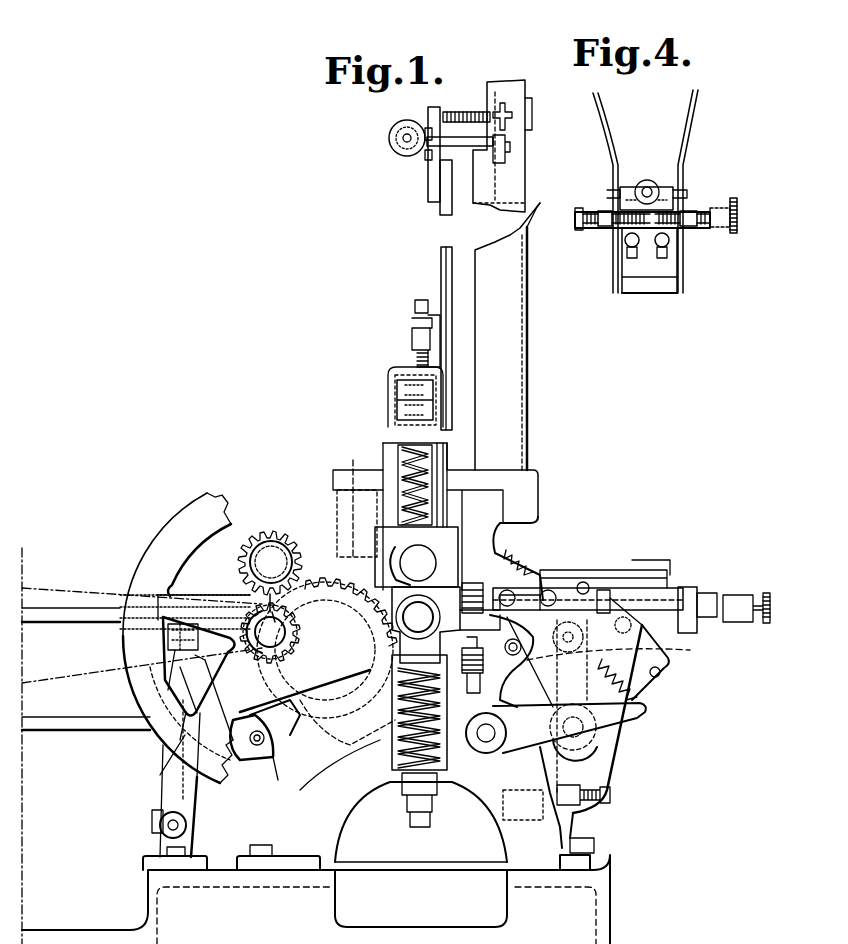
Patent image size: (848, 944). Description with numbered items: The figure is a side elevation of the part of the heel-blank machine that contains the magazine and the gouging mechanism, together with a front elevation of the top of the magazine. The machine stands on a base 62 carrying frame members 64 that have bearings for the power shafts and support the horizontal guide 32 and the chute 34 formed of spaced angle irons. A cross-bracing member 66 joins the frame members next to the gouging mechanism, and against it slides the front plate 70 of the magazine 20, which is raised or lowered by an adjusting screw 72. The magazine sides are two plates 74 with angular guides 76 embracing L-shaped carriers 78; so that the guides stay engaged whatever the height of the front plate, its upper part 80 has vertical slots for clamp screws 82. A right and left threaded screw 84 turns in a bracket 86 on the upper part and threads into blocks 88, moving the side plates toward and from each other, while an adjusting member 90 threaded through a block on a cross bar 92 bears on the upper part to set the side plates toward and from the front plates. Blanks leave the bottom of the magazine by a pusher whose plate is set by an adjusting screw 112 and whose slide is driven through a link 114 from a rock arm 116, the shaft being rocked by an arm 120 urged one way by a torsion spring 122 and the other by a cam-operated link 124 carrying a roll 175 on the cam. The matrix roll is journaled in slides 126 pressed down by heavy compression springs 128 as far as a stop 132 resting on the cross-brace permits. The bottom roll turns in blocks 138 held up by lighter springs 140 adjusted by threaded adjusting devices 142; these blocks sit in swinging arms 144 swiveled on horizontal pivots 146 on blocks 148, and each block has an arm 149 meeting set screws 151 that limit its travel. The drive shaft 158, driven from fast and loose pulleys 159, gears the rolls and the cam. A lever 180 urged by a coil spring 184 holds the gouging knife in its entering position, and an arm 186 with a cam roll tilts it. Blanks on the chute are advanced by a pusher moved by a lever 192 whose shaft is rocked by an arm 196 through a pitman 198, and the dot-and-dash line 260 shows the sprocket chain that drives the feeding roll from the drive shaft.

In FIG. 1, the magazine 20 is at (515, 420).
In FIG. 4, the magazine 20 is at (670, 290).
In FIG. 1, the horizontal guide 32 is at (245, 540).
In FIG. 1, the chute 34 is at (60, 620).
In FIG. 1, the base 62 is at (565, 918).
In FIG. 1, the frame members 64 is at (510, 838).
In FIG. 1, the cross-bracing member 66 is at (390, 370).
In FIG. 1, the front plate 70 is at (441, 272).
In FIG. 1, the adjusting screw 72 is at (414, 302).
In FIG. 1, the side plates 74 is at (510, 357).
In FIG. 4, the side plates 74 is at (680, 143).
In FIG. 1, the angular guides 76 is at (507, 148).
In FIG. 1, the L-shaped carriers 78 is at (458, 135).
In FIG. 1, the upper part of front plate 80 is at (434, 200).
In FIG. 4, the upper part of front plate 80 is at (668, 265).
In FIG. 1, the clamp screws 82 is at (425, 160).
In FIG. 4, the clamp screws 82 is at (660, 258).
In FIG. 1, the right and left threaded screw 84 is at (389, 140).
In FIG. 4, the right and left threaded screw 84 is at (708, 207).
In FIG. 4, the bracket 86 is at (582, 232).
In FIG. 4, the blocks 88 is at (602, 210).
In FIG. 1, the adjusting member 90 is at (527, 100).
In FIG. 1, the cross bar 92 is at (505, 105).
In FIG. 4, the cross bar 92 is at (622, 185).
In FIG. 1, the adjusting screw 112 is at (766, 593).
In FIG. 1, the link 114 is at (668, 680).
In FIG. 1, the rock arm 116 is at (640, 700).
In FIG. 1, the arm 120 is at (552, 794).
In FIG. 1, the torsion spring 122 is at (692, 652).
In FIG. 1, the cam-operated link 124 is at (590, 570).
In FIG. 1, the slides 126 is at (520, 520).
In FIG. 1, the compression spring 128 is at (430, 480).
In FIG. 1, the stop 132 is at (397, 404).
In FIG. 1, the blocks 138 is at (395, 690).
In FIG. 1, the springs 140 is at (400, 735).
In FIG. 1, the threaded adjusting devices 142 is at (405, 822).
In FIG. 1, the swinging arms 144 is at (278, 760).
In FIG. 1, the horizontal pivots 146 is at (163, 680).
In FIG. 1, the blocks 148 is at (180, 667).
In FIG. 1, the arm 149 is at (500, 560).
In FIG. 1, the set screws 151 is at (520, 552).
In FIG. 1, the drive shaft 158 is at (270, 600).
In FIG. 1, the fast and loose pulleys 159 is at (211, 490).
In FIG. 1, the roll 175 is at (353, 472).
In FIG. 1, the lever 180 is at (337, 784).
In FIG. 1, the coil spring 184 is at (620, 745).
In FIG. 1, the arm 186 is at (553, 697).
In FIG. 1, the lever 192 is at (240, 825).
In FIG. 1, the arm 196 is at (163, 762).
In FIG. 1, the pitman 198 is at (250, 785).
In FIG. 1, the dot-and-dash line 260 is at (95, 592).